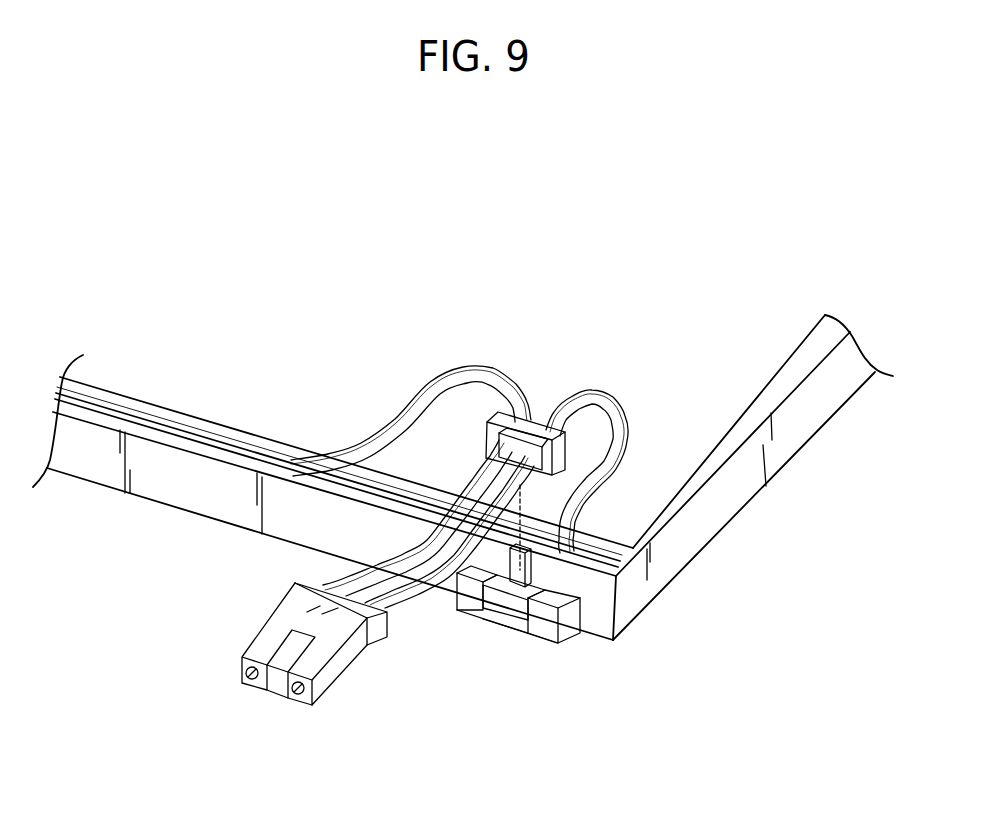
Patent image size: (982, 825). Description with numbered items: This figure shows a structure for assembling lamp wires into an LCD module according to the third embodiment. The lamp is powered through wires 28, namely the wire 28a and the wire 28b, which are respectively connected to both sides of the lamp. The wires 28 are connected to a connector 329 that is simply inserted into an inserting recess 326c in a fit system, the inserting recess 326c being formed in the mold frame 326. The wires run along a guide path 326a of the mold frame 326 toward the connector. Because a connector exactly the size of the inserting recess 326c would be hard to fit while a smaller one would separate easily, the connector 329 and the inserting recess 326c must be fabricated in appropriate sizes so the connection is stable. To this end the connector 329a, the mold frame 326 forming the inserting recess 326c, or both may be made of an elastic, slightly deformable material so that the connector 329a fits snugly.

The mold frame 326 is at (197, 500).
The wire guide groove 326a is at (348, 481).
The inserting recess 326c is at (540, 580).
The connector 329 is at (600, 451).
The connector 329a is at (532, 468).
The wires 28 is at (388, 608).
The wire 28a is at (400, 556).
The wire 28b is at (437, 565).